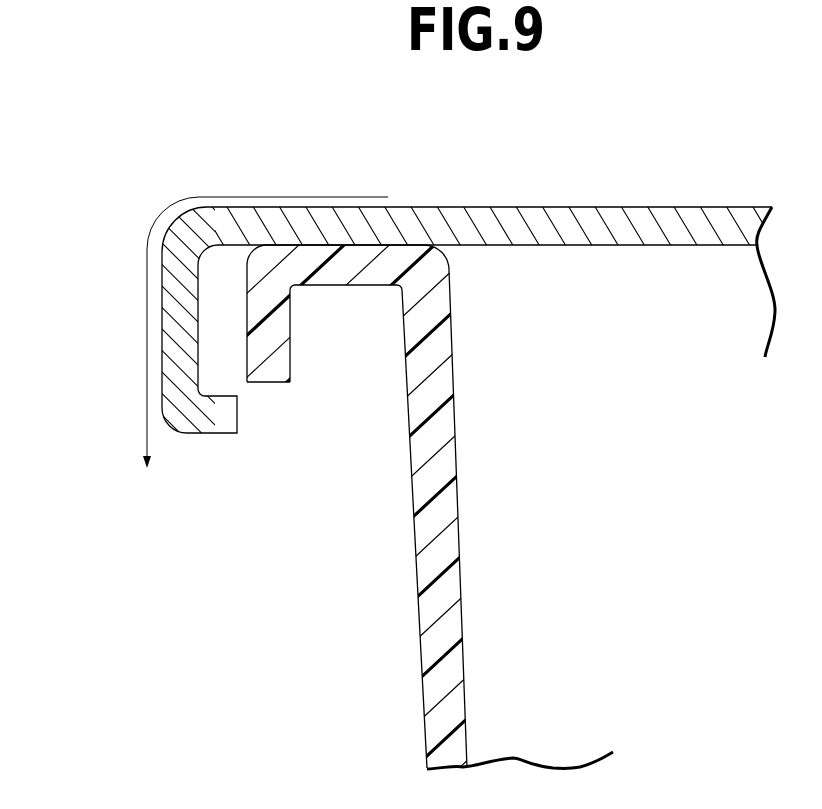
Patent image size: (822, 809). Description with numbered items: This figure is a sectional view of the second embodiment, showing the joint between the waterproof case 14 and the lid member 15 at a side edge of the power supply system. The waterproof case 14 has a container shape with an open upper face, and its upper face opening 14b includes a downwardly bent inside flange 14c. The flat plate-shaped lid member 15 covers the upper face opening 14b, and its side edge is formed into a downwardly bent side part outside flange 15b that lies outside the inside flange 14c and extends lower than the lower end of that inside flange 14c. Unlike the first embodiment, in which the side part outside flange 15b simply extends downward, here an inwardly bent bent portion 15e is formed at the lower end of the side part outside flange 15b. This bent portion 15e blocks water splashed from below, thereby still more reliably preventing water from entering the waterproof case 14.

The waterproof case 14 is at (406, 404).
The upper face opening 14b is at (345, 247).
The inside flange 14c is at (280, 335).
The lid member 15 is at (402, 330).
The side part outside flange 15b is at (165, 335).
The bent portion 15e is at (222, 418).